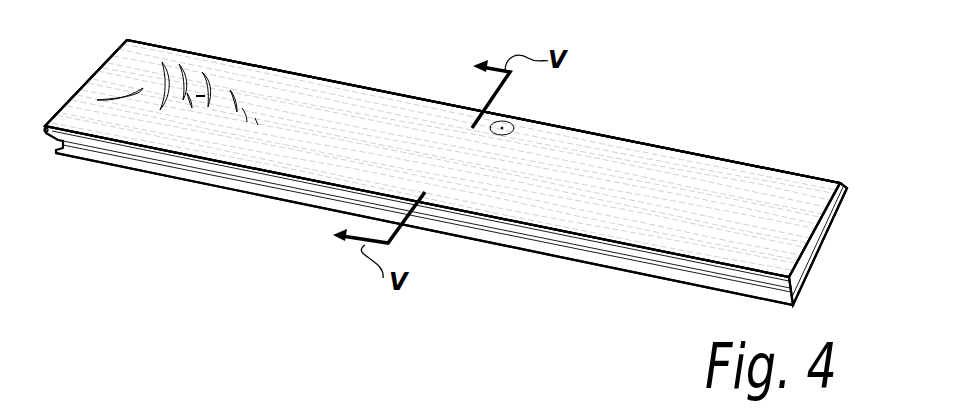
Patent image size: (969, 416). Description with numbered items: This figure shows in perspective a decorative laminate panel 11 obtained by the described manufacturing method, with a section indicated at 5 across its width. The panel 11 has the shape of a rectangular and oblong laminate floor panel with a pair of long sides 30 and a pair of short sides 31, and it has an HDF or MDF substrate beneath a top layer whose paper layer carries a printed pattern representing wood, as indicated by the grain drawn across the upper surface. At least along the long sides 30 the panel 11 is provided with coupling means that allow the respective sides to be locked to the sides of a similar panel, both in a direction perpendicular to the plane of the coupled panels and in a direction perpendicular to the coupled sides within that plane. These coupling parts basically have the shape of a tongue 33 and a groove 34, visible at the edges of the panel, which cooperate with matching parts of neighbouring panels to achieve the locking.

The decorative top surface 5 is at (567, 165).
The laminate panel 11 is at (712, 145).
The long sides 30 is at (622, 138).
The short sides 31 is at (107, 64).
The tongue 33 is at (320, 78).
The groove 34 is at (803, 267).